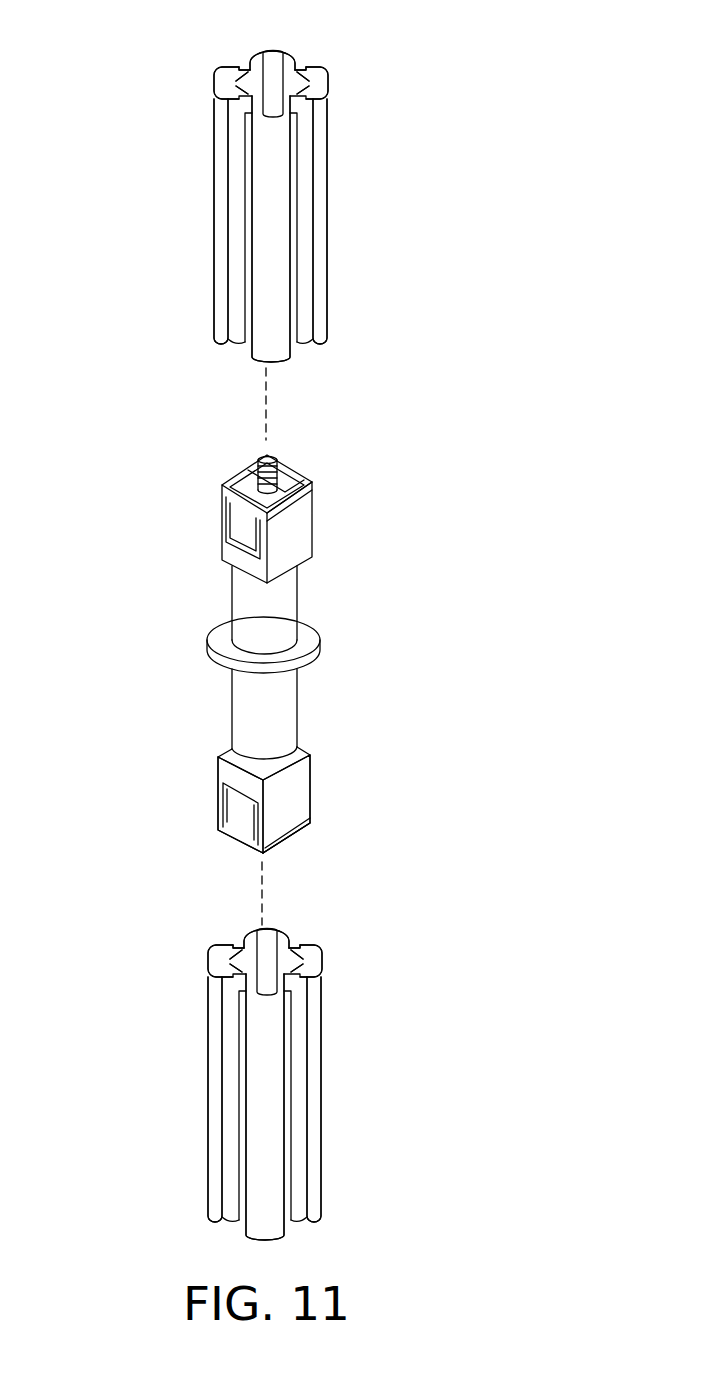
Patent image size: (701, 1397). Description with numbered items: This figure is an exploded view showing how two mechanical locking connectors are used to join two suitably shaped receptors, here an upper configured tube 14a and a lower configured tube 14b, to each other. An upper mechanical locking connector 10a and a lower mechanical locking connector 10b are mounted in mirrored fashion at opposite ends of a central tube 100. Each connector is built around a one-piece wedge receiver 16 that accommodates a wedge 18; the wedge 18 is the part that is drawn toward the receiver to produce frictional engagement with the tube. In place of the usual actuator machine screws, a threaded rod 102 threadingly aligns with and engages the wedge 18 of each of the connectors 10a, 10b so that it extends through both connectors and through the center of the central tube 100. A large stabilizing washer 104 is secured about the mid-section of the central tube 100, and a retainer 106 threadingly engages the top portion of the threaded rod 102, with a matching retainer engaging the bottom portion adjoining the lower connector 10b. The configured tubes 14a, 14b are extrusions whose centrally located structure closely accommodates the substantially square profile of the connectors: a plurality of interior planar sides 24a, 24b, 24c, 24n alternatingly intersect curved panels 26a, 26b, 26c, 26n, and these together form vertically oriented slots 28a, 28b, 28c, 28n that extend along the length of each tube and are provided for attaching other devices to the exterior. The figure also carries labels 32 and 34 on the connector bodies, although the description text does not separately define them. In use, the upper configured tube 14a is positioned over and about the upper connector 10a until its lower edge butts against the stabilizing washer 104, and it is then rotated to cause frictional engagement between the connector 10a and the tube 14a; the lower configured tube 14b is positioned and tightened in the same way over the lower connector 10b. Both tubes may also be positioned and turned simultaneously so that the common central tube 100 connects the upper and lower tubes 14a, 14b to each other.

The upper mechanical locking connector 10a is at (210, 528).
The lower mechanical locking connector 10b is at (208, 790).
The upper configured tube 14a is at (212, 215).
The lower configured tube 14b is at (205, 1118).
The wedge receiver 16 is at (313, 533).
The wedge 18 is at (313, 478).
The interior planar side 24a is at (242, 75).
The interior planar side 24b is at (292, 73).
The interior planar side 24c is at (306, 95).
The interior planar side 24n is at (240, 96).
The curved panel 26a is at (268, 50).
The curved panel 26b is at (328, 80).
The curved panel 26c is at (268, 130).
The curved panel 26n is at (214, 101).
The vertically oriented slot 28a is at (240, 62).
The vertically oriented slot 28b is at (306, 71).
The vertically oriented slot 28c is at (306, 120).
The vertically oriented slot 28n is at (237, 133).
The connector side wall 32 is at (303, 513).
The connector undercut slot 34 is at (222, 507).
The central tube 100 is at (287, 600).
The threaded rod 102 is at (265, 455).
The stabilizing washer 104 is at (322, 642).
The retainer 106 is at (283, 480).